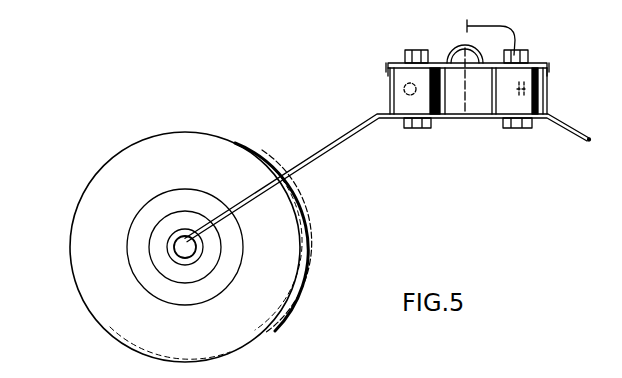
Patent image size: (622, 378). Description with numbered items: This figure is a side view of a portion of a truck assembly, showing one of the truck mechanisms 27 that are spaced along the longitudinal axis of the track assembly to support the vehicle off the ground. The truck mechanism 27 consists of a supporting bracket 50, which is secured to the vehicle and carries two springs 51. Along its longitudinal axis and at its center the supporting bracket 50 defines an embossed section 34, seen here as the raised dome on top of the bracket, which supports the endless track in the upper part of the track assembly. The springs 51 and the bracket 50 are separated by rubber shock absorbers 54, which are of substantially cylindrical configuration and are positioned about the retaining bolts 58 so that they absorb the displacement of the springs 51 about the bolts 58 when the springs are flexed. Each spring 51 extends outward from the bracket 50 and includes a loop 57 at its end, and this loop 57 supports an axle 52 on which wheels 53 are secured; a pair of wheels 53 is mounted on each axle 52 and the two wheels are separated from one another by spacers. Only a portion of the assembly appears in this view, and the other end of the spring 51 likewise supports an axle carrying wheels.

The truck mechanism 27 is at (563, 288).
The embossed section 34 is at (481, 42).
The supporting bracket 50 is at (398, 62).
The spring 51 is at (306, 162).
The axle 52 is at (190, 250).
The wheel 53 is at (287, 257).
The rubber shock absorber 54 is at (425, 97).
The loop 57 is at (198, 238).
The retaining bolt 58 is at (421, 50).